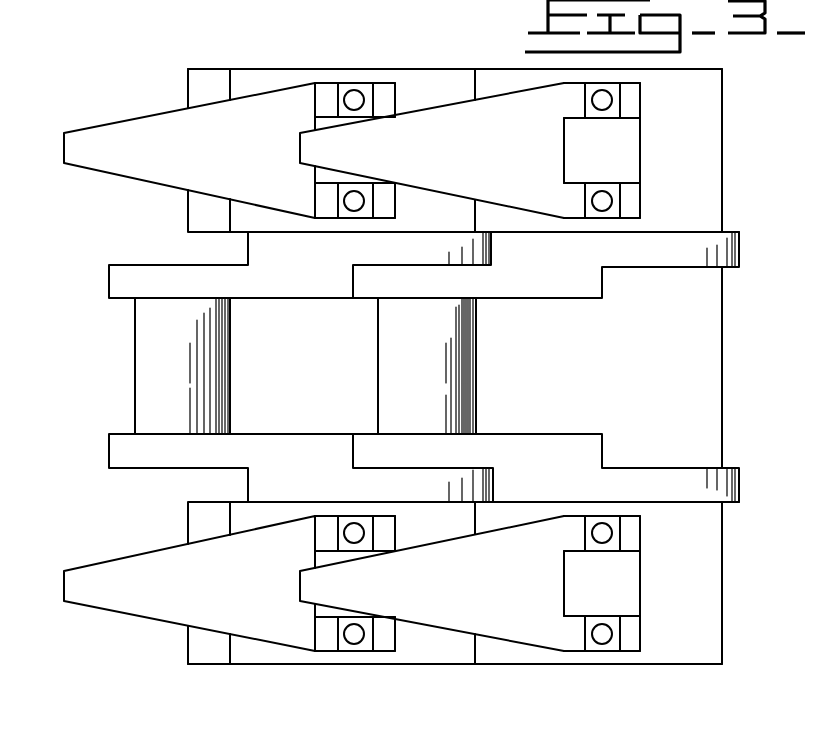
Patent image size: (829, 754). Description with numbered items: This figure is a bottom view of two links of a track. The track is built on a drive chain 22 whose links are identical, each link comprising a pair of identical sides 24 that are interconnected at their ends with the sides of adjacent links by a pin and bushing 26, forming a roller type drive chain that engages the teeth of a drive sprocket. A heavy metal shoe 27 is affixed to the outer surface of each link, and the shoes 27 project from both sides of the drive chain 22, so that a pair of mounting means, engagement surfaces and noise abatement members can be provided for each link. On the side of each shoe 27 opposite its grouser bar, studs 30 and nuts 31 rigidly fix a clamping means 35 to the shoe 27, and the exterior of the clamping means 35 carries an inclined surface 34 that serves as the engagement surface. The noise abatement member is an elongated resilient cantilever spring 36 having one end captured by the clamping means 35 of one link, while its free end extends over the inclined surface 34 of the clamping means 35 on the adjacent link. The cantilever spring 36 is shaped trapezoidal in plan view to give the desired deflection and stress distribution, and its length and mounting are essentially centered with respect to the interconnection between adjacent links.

The drive chain 22 is at (122, 3).
The sides 24 is at (284, 290).
The pin and bushing 26 is at (152, 393).
The shoe 27 is at (237, 498).
The stud 30 is at (354, 88).
The nut 31 is at (362, 88).
The inclined surface 34 is at (622, 168).
The clamping means 35 is at (388, 92).
The cantilever spring 36 is at (225, 163).